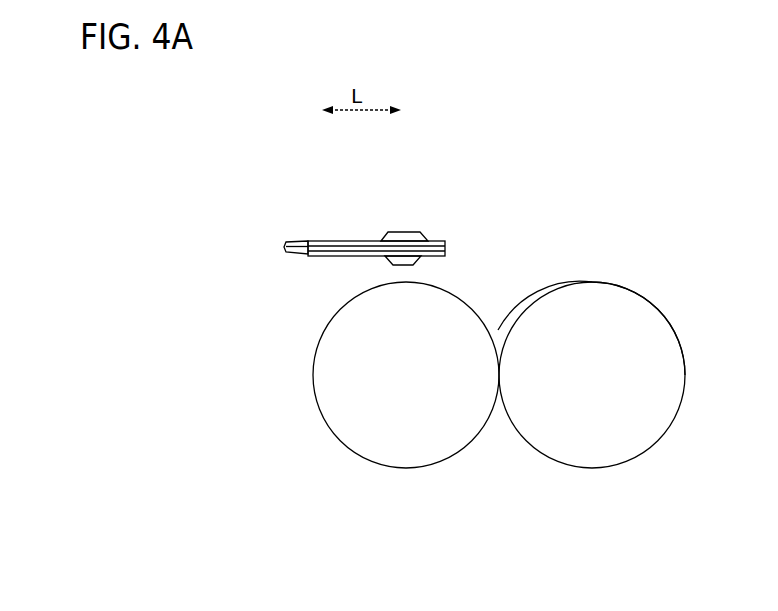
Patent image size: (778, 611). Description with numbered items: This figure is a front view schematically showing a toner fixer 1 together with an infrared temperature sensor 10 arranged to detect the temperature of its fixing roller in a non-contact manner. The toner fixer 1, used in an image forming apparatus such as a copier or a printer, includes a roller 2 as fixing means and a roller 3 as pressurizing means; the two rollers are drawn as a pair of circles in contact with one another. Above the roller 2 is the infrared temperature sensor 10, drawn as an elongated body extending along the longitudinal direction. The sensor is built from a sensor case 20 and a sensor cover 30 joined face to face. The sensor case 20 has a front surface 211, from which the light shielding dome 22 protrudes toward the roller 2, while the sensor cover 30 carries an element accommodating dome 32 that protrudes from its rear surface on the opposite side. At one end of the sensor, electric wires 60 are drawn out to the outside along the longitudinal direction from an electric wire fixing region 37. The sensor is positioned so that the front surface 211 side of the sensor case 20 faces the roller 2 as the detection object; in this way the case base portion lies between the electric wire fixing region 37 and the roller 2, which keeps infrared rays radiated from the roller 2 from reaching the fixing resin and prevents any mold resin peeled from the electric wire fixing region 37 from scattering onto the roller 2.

The toner fixer 1 is at (690, 316).
The roller 2 is at (402, 469).
The roller 3 is at (591, 469).
The infrared temperature sensor 10 is at (343, 196).
The sensor case 20 is at (454, 264).
The light shielding dome 22 is at (385, 261).
The sensor cover 30 is at (453, 233).
The element accommodating dome 32 is at (392, 232).
The electric wire fixing region 37 is at (318, 240).
The electric wires 60 is at (291, 257).
The front surface 211 is at (321, 258).